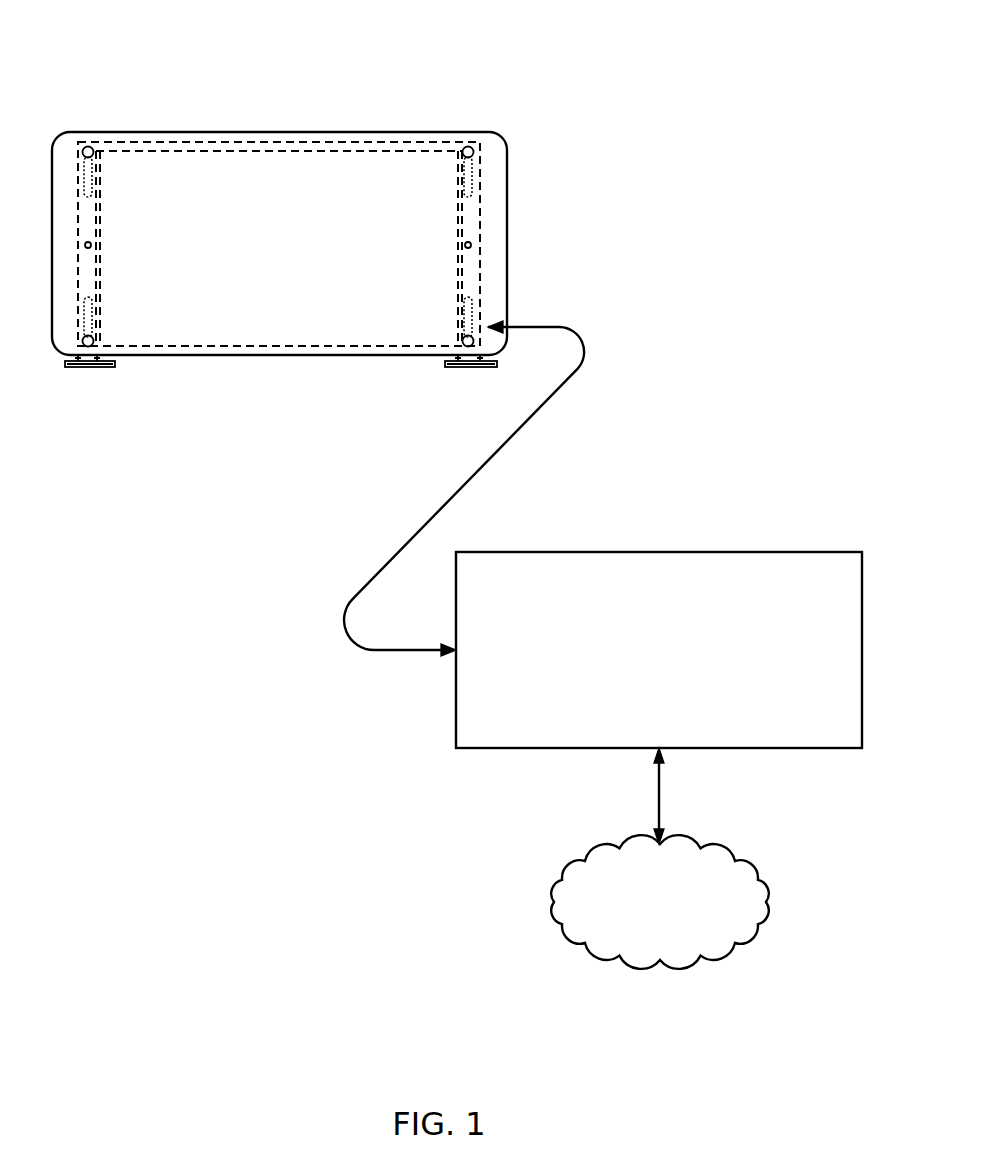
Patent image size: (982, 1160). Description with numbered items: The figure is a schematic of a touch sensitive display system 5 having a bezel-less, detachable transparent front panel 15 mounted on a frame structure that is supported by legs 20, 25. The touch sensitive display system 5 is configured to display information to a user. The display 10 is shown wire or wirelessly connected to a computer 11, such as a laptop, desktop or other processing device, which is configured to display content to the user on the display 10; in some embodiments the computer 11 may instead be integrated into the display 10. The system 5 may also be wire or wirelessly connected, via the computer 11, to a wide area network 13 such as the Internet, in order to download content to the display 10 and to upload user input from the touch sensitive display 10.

The touch sensitive display system 5 is at (645, 61).
The display 10 is at (313, 131).
The computer 11 is at (798, 552).
The wide area network 13 is at (737, 861).
The detachable transparent front panel 15 is at (496, 237).
The leg 20 is at (470, 368).
The leg 25 is at (95, 367).